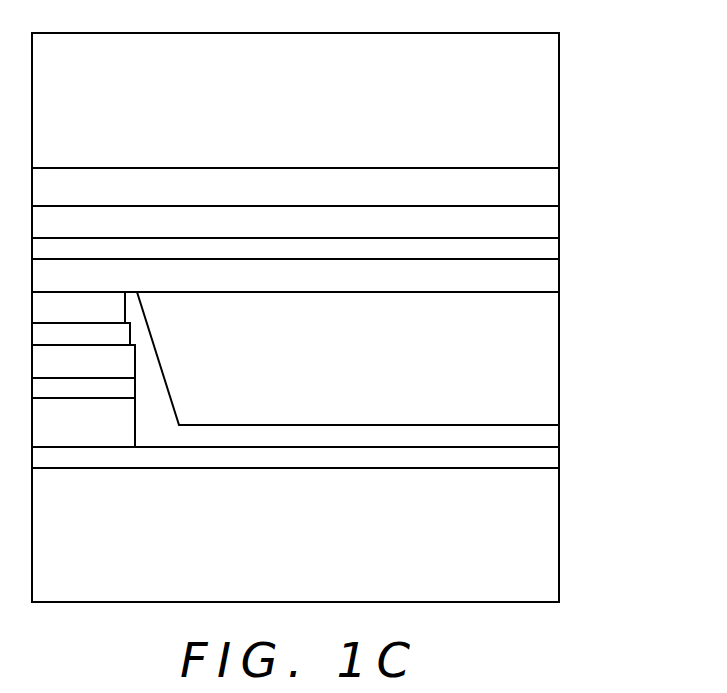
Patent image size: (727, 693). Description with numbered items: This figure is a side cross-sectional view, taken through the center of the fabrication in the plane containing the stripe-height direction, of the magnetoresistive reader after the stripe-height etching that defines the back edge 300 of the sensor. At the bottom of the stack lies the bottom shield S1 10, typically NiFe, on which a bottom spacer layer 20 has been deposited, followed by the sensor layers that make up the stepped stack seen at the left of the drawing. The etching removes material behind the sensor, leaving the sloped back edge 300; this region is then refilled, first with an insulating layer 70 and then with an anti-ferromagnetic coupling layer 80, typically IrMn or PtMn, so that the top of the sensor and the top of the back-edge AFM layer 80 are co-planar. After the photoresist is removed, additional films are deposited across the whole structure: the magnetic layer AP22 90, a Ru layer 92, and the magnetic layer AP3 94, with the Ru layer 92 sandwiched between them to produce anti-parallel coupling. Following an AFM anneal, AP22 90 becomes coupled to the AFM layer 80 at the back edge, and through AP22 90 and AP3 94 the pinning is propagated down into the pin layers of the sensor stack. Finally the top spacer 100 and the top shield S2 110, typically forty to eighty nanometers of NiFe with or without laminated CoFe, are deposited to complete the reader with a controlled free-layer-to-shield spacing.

The bottom shield S1 10 is at (548, 534).
The bottom spacer layer 20 is at (548, 462).
The insulating layer 70 is at (548, 440).
The anti-ferromagnetic coupling layer 80 is at (548, 362).
The AP22 magnetic layer 90 is at (548, 280).
The Ru layer 92 is at (548, 254).
The AP3 magnetic layer 94 is at (548, 226).
The top spacer 100 is at (548, 189).
The top shield S2 110 is at (548, 102).
The back edge 300 is at (145, 377).